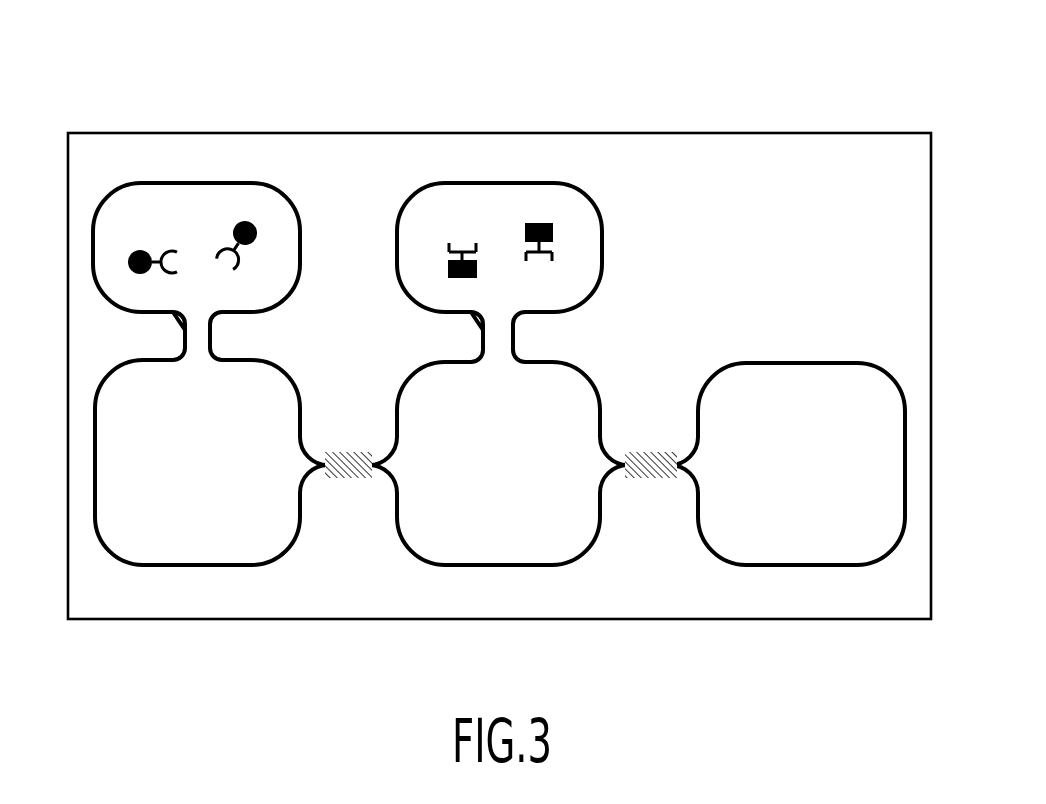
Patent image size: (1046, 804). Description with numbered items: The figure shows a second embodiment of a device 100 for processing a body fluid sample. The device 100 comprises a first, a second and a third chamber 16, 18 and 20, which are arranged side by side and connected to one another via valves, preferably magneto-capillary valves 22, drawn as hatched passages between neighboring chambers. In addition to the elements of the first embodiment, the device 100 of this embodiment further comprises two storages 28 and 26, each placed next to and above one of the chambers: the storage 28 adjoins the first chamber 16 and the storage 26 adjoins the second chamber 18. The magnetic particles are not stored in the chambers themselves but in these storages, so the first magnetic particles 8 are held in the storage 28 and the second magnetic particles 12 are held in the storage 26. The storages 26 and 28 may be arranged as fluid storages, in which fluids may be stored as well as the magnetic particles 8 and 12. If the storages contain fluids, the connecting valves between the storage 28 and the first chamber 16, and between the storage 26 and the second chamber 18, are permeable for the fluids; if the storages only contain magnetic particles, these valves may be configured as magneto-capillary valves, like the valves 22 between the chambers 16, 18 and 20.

The device 100 is at (829, 96).
The storage 28 is at (168, 208).
The first magnetic particle 8 is at (245, 221).
The storage 26 is at (460, 208).
The second magnetic particle 12 is at (538, 222).
The first chamber 16 is at (160, 548).
The second chamber 18 is at (470, 548).
The third chamber 20 is at (790, 548).
The magneto-capillary valve 22 is at (352, 472).